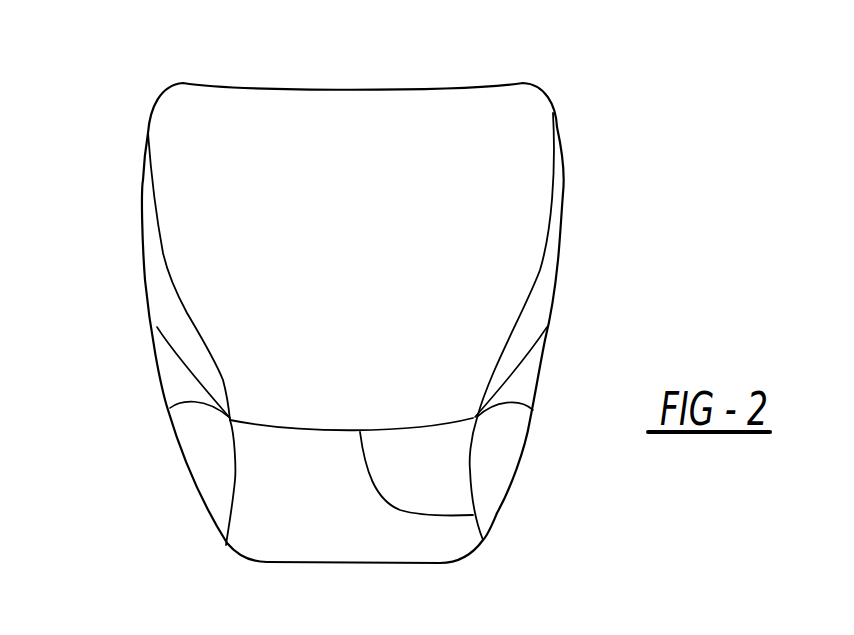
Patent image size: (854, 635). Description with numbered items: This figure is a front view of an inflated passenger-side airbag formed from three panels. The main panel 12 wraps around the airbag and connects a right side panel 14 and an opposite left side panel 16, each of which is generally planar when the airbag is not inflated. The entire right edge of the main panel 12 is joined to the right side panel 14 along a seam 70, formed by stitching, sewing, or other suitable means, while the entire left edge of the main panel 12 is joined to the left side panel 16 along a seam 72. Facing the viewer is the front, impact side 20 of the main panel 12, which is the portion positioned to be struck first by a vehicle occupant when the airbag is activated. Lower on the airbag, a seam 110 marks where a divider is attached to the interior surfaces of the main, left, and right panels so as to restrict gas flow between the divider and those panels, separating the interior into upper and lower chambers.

The main panel 12 is at (355, 167).
The seam 72 is at (148, 132).
The seam 70 is at (555, 178).
The left side panel 16 is at (145, 228).
The right side panel 14 is at (550, 258).
The front, impact side 20 is at (369, 324).
The seam 110 is at (473, 515).